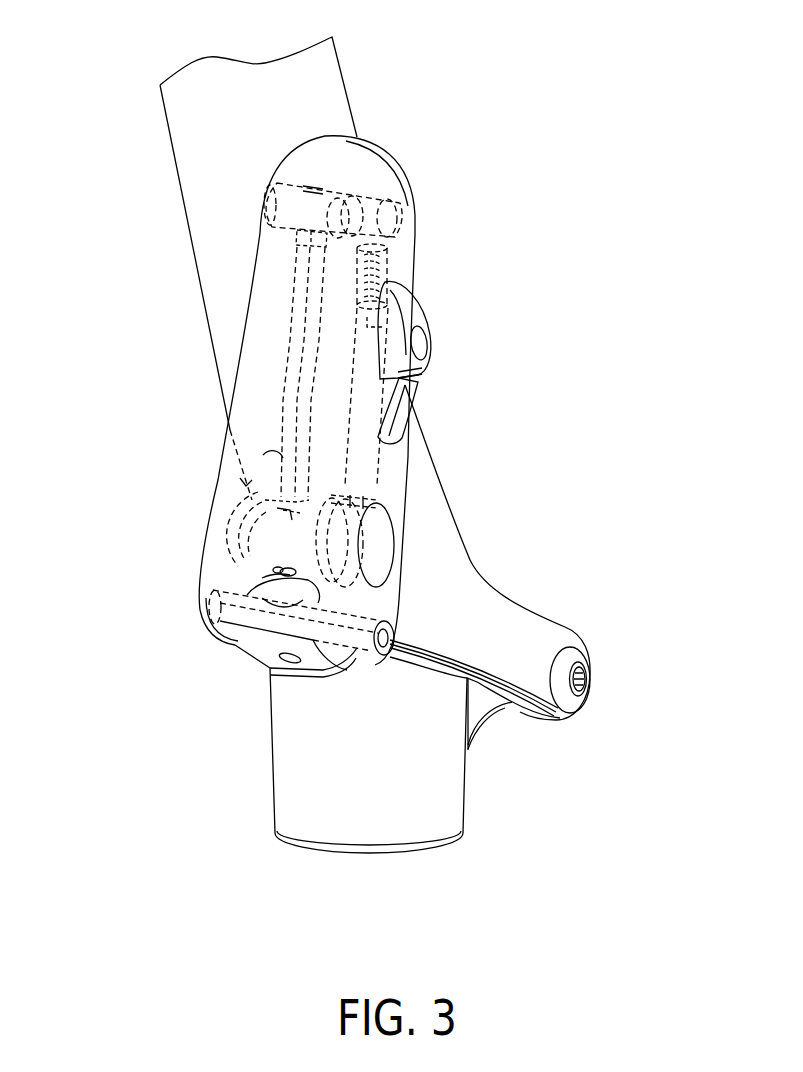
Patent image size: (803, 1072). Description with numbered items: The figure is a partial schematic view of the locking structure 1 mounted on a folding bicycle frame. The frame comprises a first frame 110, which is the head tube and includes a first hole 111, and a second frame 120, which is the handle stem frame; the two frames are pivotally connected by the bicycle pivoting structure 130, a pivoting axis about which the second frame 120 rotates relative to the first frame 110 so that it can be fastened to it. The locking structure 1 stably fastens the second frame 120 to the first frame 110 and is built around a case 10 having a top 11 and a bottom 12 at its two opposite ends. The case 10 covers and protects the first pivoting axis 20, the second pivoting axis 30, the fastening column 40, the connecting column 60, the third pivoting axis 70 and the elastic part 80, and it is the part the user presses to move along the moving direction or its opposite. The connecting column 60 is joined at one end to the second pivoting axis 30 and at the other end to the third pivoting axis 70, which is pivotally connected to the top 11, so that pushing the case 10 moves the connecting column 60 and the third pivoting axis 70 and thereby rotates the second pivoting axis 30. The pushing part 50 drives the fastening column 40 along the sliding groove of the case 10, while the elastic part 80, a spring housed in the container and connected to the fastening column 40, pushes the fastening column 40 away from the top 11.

The locking structure 1 is at (150, 541).
The case 10 is at (222, 458).
The top 11 is at (362, 144).
The bottom 12 is at (190, 608).
The first pivoting axis 20 is at (252, 623).
The second pivoting axis 30 is at (372, 553).
The fastening column 40 is at (363, 462).
The pushing part 50 is at (418, 322).
The connecting column 60 is at (291, 391).
The third pivoting axis 70 is at (268, 201).
The elastic part 80 is at (370, 265).
The first frame 110 is at (418, 825).
The first hole 111 is at (380, 667).
The second frame 120 is at (478, 565).
The bicycle pivoting structure 130 is at (590, 677).